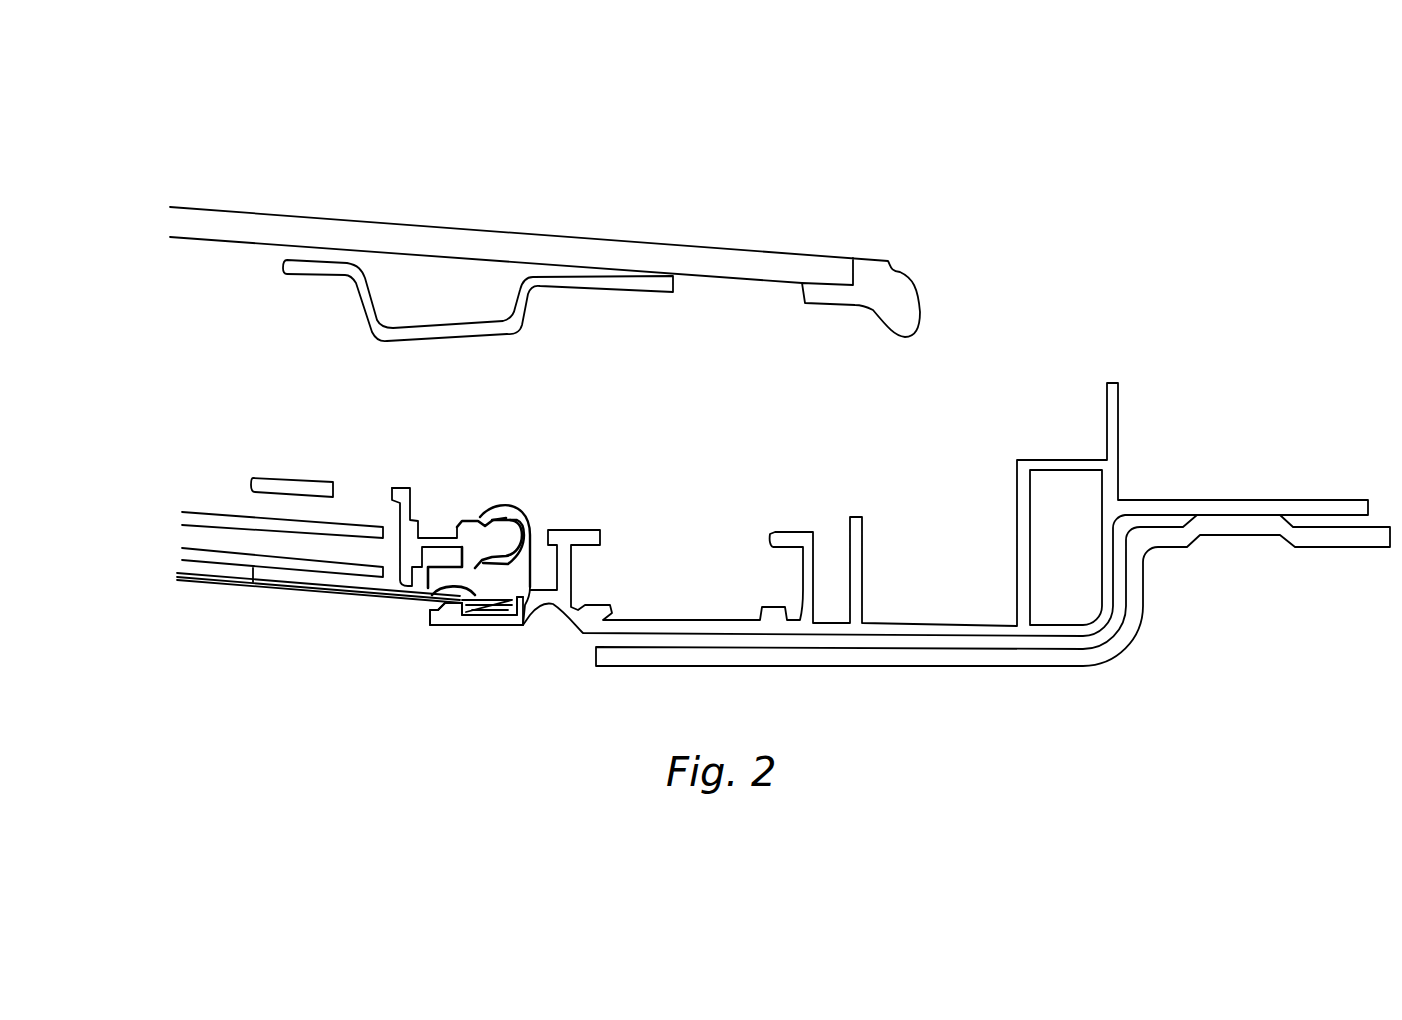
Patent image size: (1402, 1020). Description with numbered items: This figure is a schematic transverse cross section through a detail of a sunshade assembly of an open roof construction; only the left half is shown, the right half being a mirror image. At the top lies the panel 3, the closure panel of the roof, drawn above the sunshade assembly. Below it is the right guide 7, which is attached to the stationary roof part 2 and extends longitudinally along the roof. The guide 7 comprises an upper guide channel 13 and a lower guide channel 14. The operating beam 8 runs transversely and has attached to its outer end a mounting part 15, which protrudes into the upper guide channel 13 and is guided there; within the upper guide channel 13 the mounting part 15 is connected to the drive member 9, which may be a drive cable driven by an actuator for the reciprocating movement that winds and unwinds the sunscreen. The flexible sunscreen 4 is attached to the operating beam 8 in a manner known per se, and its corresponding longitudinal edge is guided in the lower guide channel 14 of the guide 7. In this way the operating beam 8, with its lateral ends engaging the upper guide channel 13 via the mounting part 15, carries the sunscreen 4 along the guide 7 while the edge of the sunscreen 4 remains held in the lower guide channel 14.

The stationary roof part 2 is at (1246, 528).
The panel 3 is at (540, 247).
The sunscreen 4 is at (273, 585).
The guide 7 is at (609, 540).
The operating beam 8 is at (212, 520).
The drive member 9 is at (500, 542).
The upper guide channel 13 is at (485, 533).
The lower guide channel 14 is at (497, 630).
The mounting part 15 is at (435, 535).